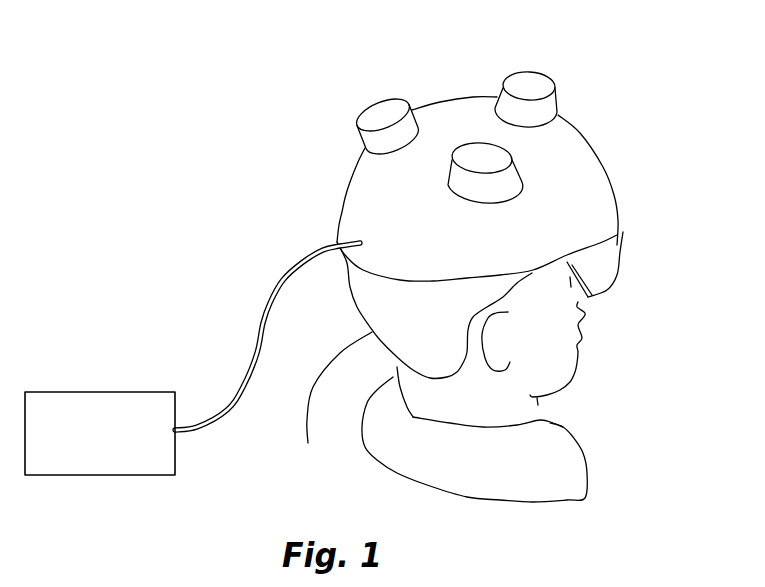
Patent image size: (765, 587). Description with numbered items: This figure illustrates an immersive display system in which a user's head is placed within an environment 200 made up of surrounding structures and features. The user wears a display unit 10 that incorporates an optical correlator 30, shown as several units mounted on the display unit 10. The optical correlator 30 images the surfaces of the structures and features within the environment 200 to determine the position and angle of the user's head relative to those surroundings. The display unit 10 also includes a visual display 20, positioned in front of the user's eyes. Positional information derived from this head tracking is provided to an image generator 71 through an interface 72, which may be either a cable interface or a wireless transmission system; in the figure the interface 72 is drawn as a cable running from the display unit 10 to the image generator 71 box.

The environment 200 is at (190, 170).
The display unit 10 is at (631, 115).
The optical correlator 30 is at (372, 112).
The visual display 20 is at (610, 260).
The interface 72 is at (277, 290).
The image generator 71 is at (107, 435).